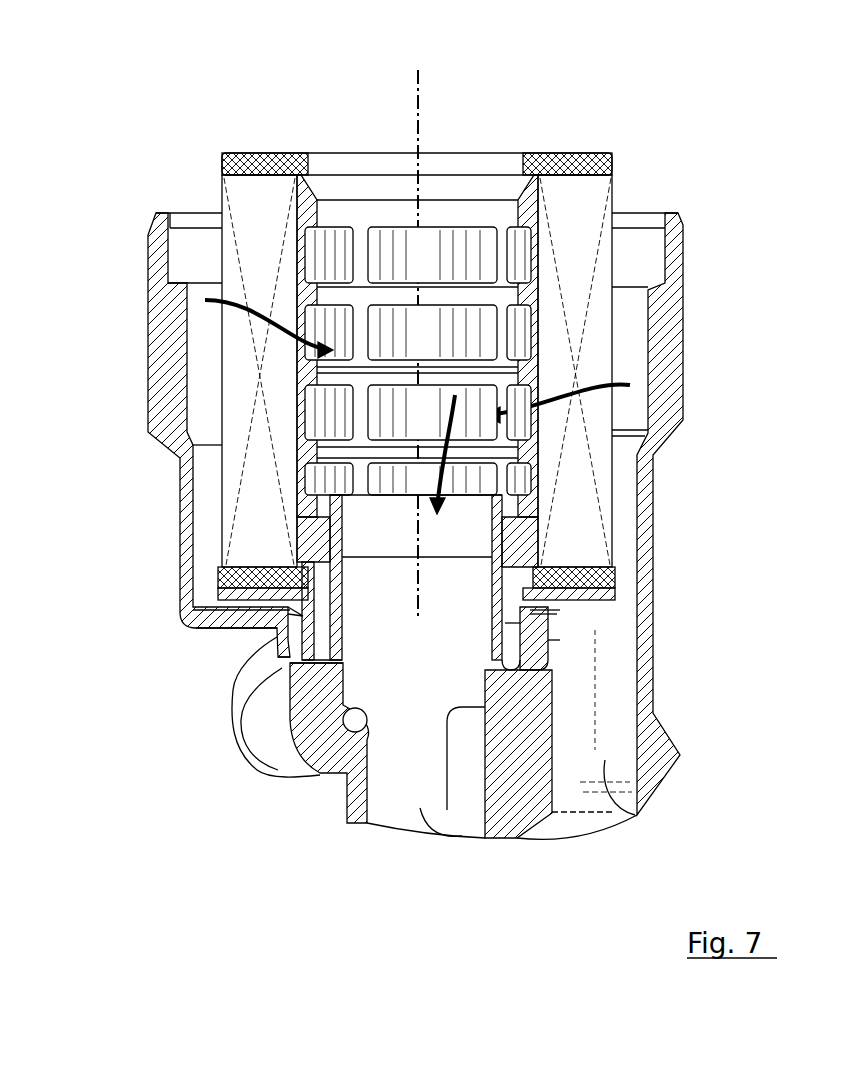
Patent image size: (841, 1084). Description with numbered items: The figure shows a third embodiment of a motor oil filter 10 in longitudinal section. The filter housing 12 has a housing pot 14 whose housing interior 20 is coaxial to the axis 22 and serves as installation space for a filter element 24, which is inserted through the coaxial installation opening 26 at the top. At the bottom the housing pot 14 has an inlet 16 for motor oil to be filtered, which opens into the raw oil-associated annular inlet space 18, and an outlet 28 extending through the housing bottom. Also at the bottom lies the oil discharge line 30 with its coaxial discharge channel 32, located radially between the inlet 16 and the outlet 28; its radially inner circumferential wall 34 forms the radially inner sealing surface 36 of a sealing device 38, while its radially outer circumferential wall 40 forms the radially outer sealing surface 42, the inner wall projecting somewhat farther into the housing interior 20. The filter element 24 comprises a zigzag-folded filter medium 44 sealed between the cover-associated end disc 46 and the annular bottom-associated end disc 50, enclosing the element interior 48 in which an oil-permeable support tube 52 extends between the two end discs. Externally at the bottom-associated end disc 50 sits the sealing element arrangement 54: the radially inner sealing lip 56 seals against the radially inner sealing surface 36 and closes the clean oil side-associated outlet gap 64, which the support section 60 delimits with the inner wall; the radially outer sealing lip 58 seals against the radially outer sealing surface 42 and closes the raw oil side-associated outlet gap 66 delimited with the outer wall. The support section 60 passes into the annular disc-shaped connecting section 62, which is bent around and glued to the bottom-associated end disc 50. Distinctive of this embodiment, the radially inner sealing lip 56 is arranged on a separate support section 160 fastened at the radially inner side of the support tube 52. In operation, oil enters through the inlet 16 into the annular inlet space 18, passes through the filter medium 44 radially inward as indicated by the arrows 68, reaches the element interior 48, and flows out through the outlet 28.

The oil filter 10 is at (698, 98).
The filter housing 12 is at (150, 300).
The housing pot 14 is at (160, 380).
The inlet 16 is at (605, 772).
The annular inlet space 18 is at (205, 475).
The housing interior 20 is at (630, 332).
The axis 22 is at (418, 80).
The filter element 24 is at (576, 154).
The installation opening 26 is at (205, 220).
The outlet 28 is at (418, 812).
The oil discharge line 30 is at (303, 667).
The discharge channel 32 is at (290, 658).
The radially inner circumferential wall 34 is at (337, 633).
The radially inner sealing surface 36 is at (328, 546).
The sealing device 38 is at (522, 662).
The radially outer circumferential wall 40 is at (277, 638).
The radially outer sealing surface 42 is at (290, 610).
The filter medium 44 is at (555, 230).
The cover-associated end disc 46 is at (262, 152).
The element interior 48 is at (372, 268).
The bottom-associated end disc 50 is at (615, 585).
The support tube 52 is at (505, 290).
The sealing element arrangement 54 is at (319, 572).
The radially inner sealing lip 56 is at (505, 535).
The radially outer sealing lip 58 is at (548, 640).
The support section 60 is at (500, 623).
The connecting section 62 is at (530, 607).
The clean oil side-associated outlet gap 64 is at (322, 510).
The raw oil side-associated outlet gap 66 is at (550, 613).
The arrows 68 is at (655, 405).
The support section 160 is at (305, 540).